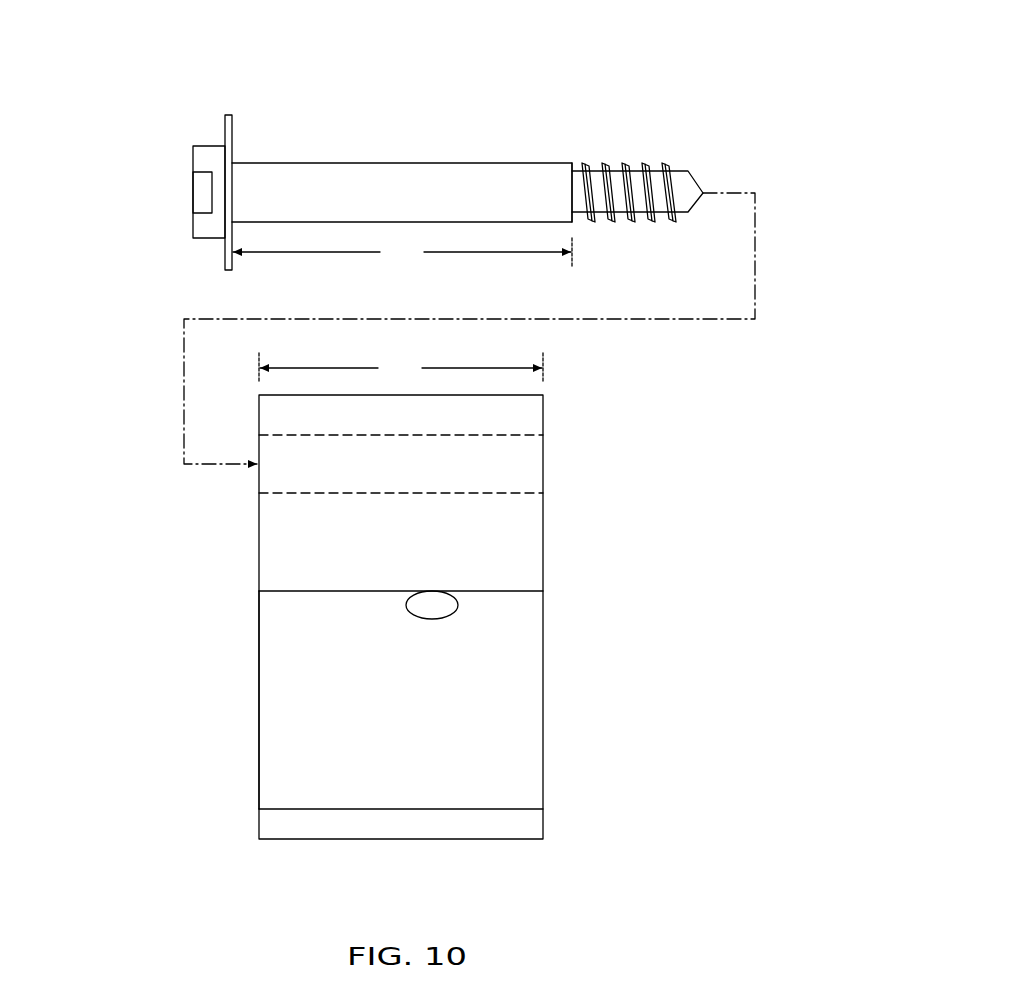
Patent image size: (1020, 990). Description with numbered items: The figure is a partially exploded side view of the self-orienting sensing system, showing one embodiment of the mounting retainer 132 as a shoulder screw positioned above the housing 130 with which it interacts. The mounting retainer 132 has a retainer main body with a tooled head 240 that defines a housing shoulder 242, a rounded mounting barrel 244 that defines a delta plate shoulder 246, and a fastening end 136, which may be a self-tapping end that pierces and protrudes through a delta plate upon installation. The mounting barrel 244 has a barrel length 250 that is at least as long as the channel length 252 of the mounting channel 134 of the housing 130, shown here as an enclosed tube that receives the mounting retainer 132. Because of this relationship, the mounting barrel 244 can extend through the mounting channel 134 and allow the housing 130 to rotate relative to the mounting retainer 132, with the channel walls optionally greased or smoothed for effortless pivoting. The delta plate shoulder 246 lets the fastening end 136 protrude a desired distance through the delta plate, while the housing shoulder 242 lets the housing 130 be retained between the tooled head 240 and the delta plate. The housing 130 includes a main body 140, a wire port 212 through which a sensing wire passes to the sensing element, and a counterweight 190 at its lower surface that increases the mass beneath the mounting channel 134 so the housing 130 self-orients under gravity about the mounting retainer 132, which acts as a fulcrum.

The housing 130 is at (306, 855).
The mounting retainer 132 is at (320, 126).
The mounting channel 134 is at (497, 494).
The fastening end 136 is at (609, 158).
The main body 140 is at (259, 697).
The counterweight 190 is at (400, 839).
The wire port 212 is at (446, 624).
The tooled head 240 is at (210, 145).
The housing shoulder 242 is at (234, 130).
The mounting barrel 244 is at (450, 162).
The delta plate shoulder 246 is at (565, 223).
The barrel length 250 is at (402, 253).
The channel length 252 is at (401, 368).